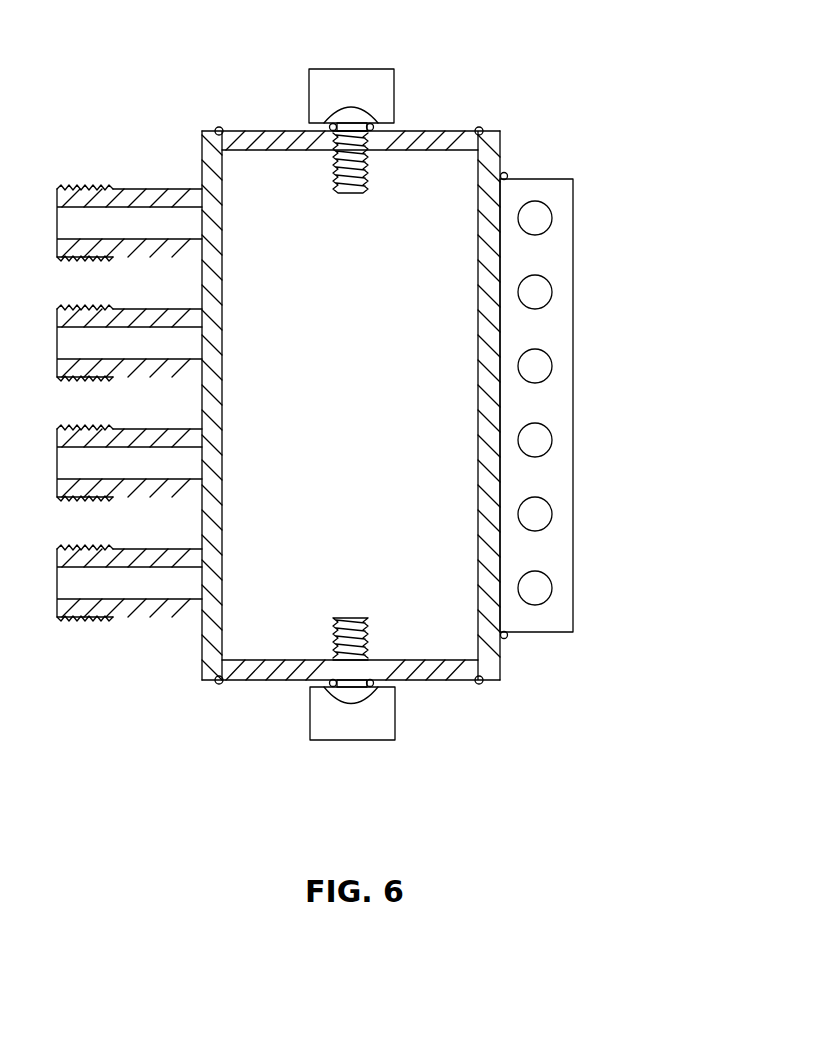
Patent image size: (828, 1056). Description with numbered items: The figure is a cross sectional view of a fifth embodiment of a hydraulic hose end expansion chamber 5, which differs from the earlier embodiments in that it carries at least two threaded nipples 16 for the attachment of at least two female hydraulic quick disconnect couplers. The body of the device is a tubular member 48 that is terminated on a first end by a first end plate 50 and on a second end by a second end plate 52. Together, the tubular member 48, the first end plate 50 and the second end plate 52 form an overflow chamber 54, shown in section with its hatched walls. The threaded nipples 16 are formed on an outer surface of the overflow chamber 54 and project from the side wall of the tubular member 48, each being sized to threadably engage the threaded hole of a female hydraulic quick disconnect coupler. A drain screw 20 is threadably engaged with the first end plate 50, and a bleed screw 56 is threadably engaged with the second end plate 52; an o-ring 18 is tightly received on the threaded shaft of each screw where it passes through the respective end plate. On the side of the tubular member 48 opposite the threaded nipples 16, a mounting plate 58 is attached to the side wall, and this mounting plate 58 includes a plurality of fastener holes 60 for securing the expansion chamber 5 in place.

The hydraulic hose end expansion chamber 5 is at (556, 757).
The threaded nipple 16 is at (135, 188).
The o-ring 18 is at (373, 127).
The drain screw 20 is at (355, 740).
The tubular member 48 is at (198, 642).
The first end plate 50 is at (427, 682).
The second end plate 52 is at (267, 130).
The overflow chamber 54 is at (452, 619).
The bleed screw 56 is at (387, 68).
The mounting plate 58 is at (527, 179).
The fastener holes 60 is at (550, 583).